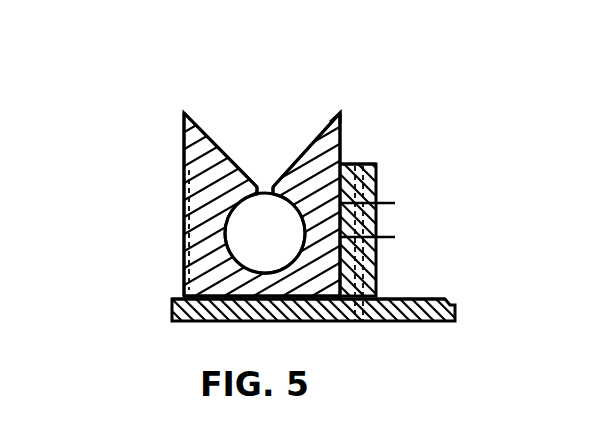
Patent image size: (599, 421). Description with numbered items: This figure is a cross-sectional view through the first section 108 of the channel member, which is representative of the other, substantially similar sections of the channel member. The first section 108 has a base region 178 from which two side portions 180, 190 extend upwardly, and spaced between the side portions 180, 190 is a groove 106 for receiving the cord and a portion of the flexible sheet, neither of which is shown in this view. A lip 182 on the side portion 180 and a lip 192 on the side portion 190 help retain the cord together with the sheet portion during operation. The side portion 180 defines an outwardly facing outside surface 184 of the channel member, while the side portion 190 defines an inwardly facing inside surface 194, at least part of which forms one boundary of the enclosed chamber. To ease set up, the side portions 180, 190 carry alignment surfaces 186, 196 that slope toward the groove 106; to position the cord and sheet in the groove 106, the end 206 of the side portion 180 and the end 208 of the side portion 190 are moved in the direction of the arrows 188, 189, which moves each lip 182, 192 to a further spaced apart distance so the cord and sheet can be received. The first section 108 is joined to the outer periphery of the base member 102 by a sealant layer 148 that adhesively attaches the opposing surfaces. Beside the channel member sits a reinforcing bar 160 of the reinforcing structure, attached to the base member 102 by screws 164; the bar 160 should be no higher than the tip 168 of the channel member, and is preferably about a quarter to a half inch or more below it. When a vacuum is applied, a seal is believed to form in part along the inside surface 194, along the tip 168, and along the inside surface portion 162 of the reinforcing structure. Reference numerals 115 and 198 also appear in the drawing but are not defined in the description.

The base member 102 is at (437, 322).
The groove 106 is at (184, 248).
The first section 108 is at (184, 133).
The top surface of substrate 115 is at (427, 299).
The sealant layer 148 is at (184, 293).
The reinforcing bar 160 is at (377, 168).
The inside surface portion 162 is at (395, 237).
The screws 164 is at (363, 321).
The tip 168 is at (340, 117).
The base region 178 is at (228, 283).
The side portion 180 is at (184, 173).
The lip 182 is at (259, 232).
The outside surface 184 is at (184, 190).
The alignment surface 186 is at (208, 135).
The arrow 188 is at (213, 77).
The arrow 189 is at (387, 88).
The side portion 190 is at (340, 164).
The lip 192 is at (265, 233).
The inside surface 194 is at (395, 203).
The alignment surface 196 is at (307, 147).
The left wall middle section 198 is at (184, 223).
The end 206 is at (184, 156).
The end 208 is at (340, 137).